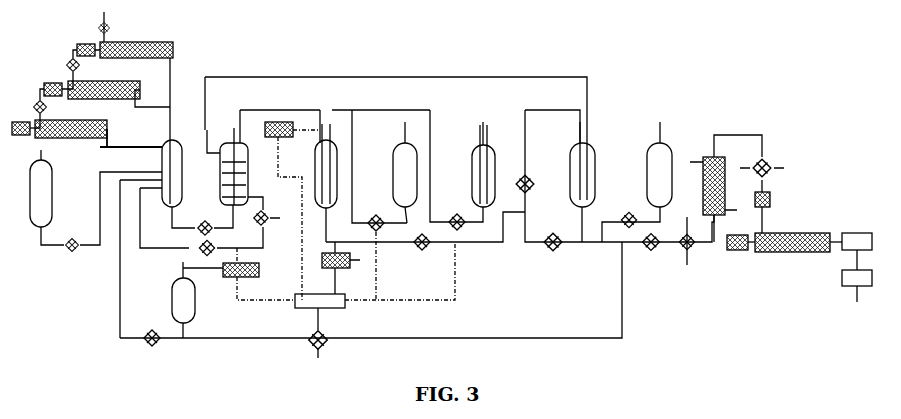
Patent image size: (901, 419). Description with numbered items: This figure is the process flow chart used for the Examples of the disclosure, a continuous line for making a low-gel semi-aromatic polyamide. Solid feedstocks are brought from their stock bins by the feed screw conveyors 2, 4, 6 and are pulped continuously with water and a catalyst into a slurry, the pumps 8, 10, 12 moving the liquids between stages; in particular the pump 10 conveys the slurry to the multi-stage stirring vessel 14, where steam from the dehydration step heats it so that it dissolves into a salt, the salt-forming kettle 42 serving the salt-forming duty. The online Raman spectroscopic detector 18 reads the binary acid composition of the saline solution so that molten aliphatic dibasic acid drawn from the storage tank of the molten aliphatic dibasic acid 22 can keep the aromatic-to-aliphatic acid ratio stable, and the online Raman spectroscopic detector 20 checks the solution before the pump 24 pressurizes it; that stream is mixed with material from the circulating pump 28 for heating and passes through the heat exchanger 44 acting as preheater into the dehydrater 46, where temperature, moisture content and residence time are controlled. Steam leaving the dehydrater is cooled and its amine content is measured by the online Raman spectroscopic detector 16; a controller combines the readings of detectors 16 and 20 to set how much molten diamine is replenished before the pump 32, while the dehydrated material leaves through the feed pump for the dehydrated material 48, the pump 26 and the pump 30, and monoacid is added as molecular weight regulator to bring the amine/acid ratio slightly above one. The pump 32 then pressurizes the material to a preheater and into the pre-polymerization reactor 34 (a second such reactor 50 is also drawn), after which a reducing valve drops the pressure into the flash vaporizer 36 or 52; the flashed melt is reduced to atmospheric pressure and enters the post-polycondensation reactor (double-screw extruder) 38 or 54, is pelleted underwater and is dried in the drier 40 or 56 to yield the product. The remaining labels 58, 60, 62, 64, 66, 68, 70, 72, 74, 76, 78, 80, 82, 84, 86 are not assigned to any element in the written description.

The feed screw conveyor 2 is at (100, 27).
The feed screw conveyor 4 is at (136, 45).
The feed screw conveyor 6 is at (86, 46).
The pump 8 is at (69, 74).
The pump 10 is at (119, 89).
The pump 12 is at (54, 86).
The multi-stage stirring vessel 14 is at (36, 113).
The online Raman spectroscopic detector 16 is at (98, 129).
The online Raman spectroscopic detector 18 is at (23, 124).
The online Raman spectroscopic detector 20 is at (41, 197).
The storage tank of the molten aliphatic dibasic acid 22 is at (114, 218).
The pump 24 is at (178, 143).
The pump 26 is at (214, 226).
The pump 28 is at (234, 166).
The pump 30 is at (249, 222).
The pump 32 is at (206, 244).
The pre-polymerization reactor 34 is at (259, 274).
The flash vaporizer 36 is at (291, 208).
The post-polycondensation reactor (double-screw extruder) 38 is at (332, 183).
The drier 40 is at (378, 257).
The salt-forming kettle 42 is at (398, 164).
The heat exchanger 44 is at (457, 227).
The dehydrater 46 is at (475, 164).
The feed pump for the dehydrated material 48 is at (422, 248).
The pre-polymerization reactor 50 is at (519, 179).
The flash vaporizer 52 is at (575, 182).
The post-polycondensation reactor (double-screw extruder) 54 is at (553, 248).
The drier 56 is at (628, 215).
The buffer vessel 58 is at (652, 164).
The valve 60 is at (651, 249).
The three-way valve 62 is at (689, 241).
The condenser 64 is at (725, 188).
The three-way valve 66 is at (762, 173).
The pump 68 is at (770, 212).
The pump 70 is at (741, 249).
The extruder heat exchanger 72 is at (798, 248).
The pelleting unit 74 is at (855, 242).
The drying unit 76 is at (833, 292).
The controller 78 is at (375, 286).
The sensor 80 is at (341, 268).
The control valve 82 is at (320, 346).
The storage vessel 84 is at (190, 300).
The valve 86 is at (152, 344).